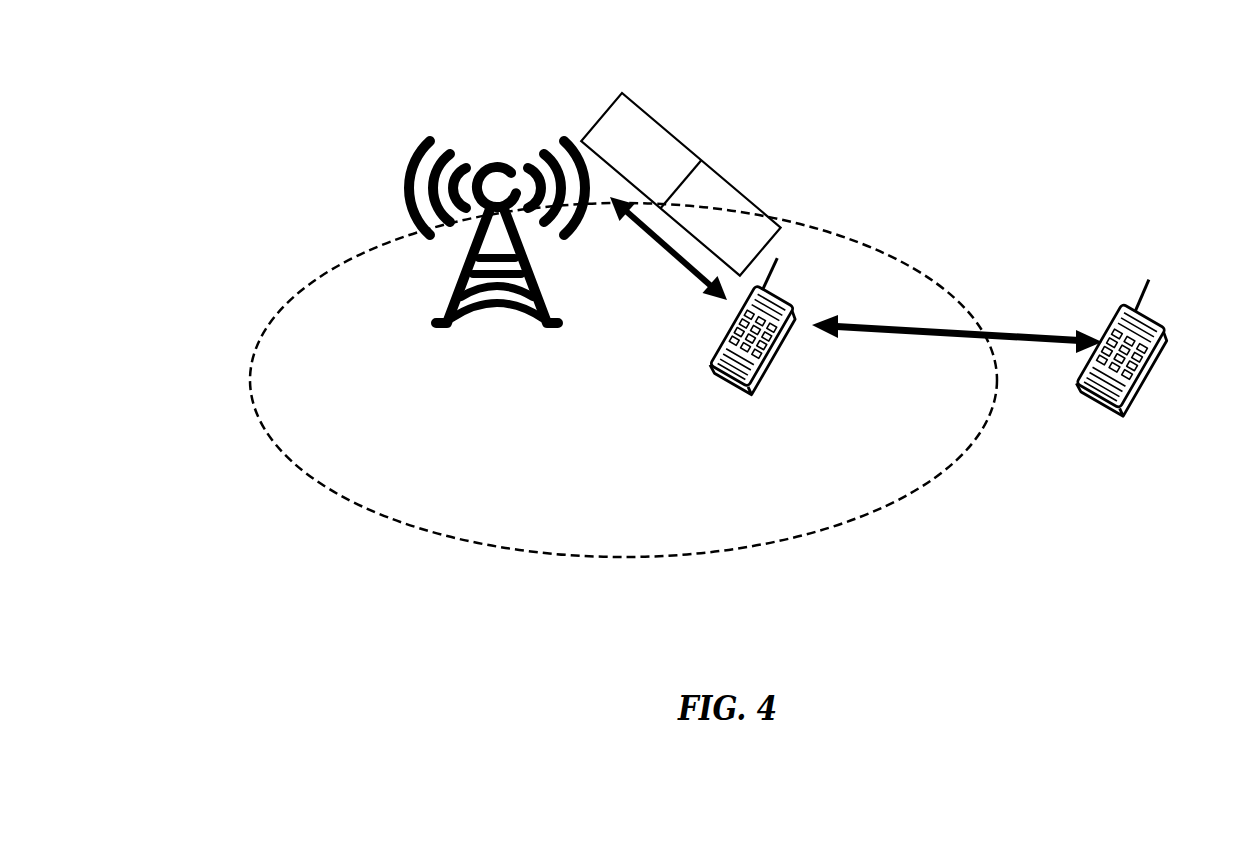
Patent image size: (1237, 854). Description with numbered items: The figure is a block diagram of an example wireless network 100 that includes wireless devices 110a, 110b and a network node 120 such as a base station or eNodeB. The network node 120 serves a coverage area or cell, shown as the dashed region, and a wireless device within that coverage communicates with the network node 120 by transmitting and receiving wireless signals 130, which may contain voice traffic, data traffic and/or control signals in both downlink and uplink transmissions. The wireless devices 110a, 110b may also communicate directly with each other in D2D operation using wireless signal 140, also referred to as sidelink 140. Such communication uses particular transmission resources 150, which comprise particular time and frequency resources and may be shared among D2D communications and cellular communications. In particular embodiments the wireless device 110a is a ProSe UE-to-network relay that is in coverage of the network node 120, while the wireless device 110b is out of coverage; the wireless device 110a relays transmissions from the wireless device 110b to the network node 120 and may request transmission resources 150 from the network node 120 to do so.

The wireless network 100 is at (623, 286).
The wireless device 110a is at (760, 385).
The wireless device 110b is at (1128, 402).
The network node 120 is at (438, 292).
The wireless signals 130 is at (683, 260).
The wireless signal (sidelink) 140 is at (1043, 333).
The transmission resources 150 is at (680, 184).